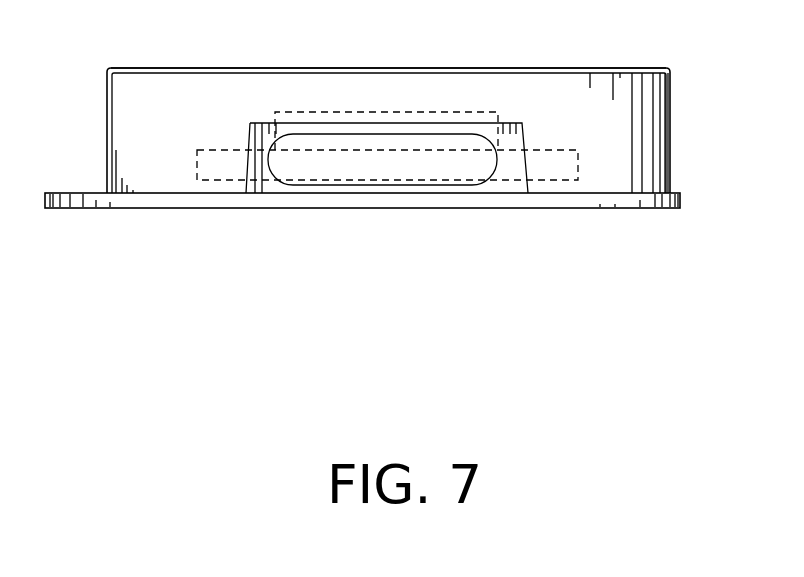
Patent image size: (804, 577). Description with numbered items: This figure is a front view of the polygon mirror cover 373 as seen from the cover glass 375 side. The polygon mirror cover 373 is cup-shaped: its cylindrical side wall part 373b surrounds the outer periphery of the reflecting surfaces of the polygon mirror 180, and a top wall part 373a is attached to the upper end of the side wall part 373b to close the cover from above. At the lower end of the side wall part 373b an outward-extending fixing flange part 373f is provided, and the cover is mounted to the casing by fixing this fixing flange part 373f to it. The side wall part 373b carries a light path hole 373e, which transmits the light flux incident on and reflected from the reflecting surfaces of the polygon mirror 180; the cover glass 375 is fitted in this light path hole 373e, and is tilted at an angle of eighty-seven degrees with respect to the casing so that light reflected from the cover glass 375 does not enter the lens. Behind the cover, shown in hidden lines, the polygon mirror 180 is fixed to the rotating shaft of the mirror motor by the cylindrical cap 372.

The polygon mirror cover 373 is at (548, 69).
The top wall part 373a is at (287, 68).
The cylindrical side wall part 373b is at (665, 131).
The fixing flange part 373f is at (62, 193).
The light path hole 373e is at (268, 172).
The cover glass 375 is at (392, 172).
The cylindrical cap 372 is at (442, 110).
The polygon mirror 180 is at (556, 175).